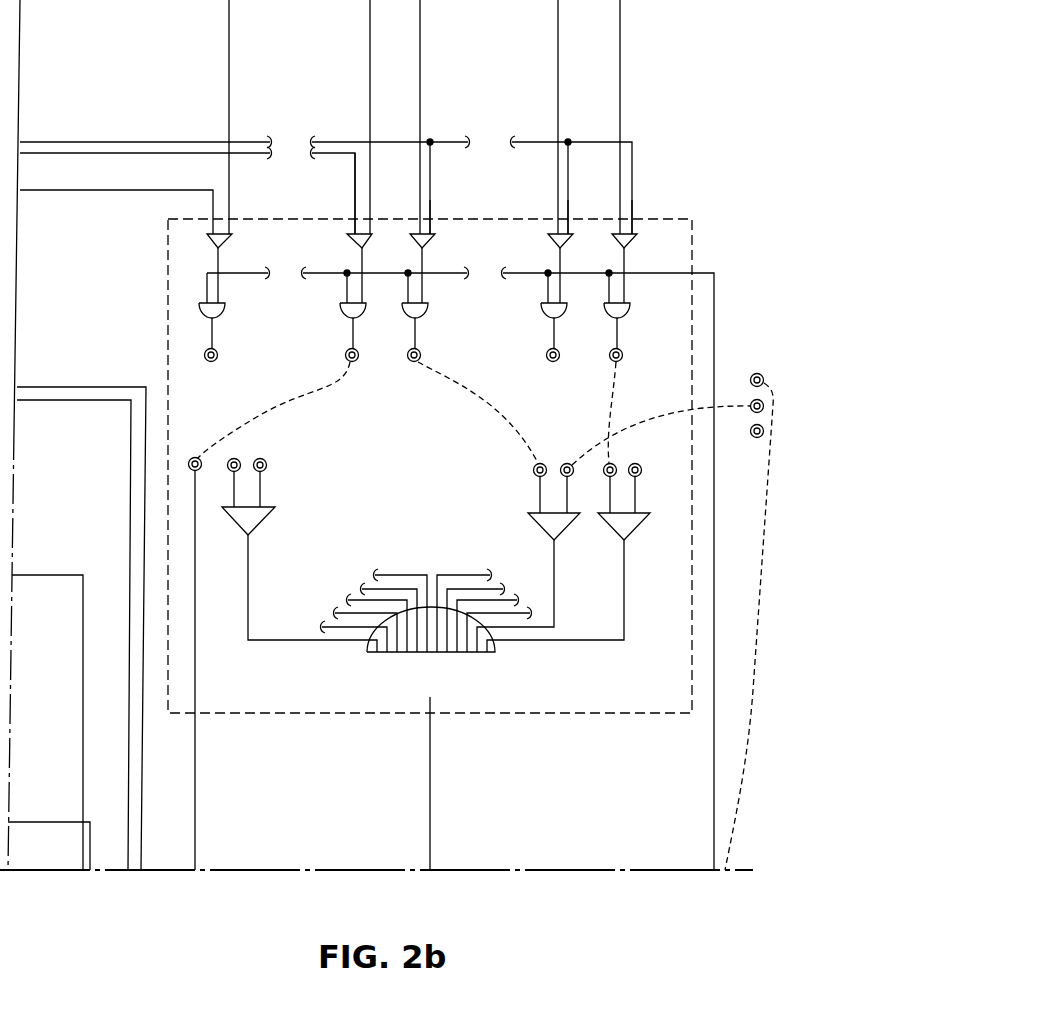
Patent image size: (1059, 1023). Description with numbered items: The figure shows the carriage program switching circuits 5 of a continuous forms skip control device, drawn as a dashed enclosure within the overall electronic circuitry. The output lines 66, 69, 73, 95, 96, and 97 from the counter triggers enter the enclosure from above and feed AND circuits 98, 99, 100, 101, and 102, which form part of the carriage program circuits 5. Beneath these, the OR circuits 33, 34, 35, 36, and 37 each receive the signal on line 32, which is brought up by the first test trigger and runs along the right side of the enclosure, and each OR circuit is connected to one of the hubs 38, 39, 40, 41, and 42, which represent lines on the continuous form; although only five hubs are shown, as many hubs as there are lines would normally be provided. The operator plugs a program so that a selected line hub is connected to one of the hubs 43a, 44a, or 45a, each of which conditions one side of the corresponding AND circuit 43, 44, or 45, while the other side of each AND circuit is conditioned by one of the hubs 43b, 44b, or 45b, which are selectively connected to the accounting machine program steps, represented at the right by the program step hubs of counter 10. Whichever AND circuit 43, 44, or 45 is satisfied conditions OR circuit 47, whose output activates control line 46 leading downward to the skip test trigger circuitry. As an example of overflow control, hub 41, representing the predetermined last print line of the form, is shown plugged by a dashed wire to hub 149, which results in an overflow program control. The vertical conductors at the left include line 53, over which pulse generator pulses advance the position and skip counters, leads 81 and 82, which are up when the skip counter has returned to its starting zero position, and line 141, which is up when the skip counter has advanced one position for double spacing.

The carriage program switching circuits 5 is at (265, 217).
The counter 10 is at (758, 595).
The line 32 is at (714, 740).
The OR circuit 33 is at (626, 310).
The OR circuit 34 is at (545, 311).
The OR circuit 35 is at (424, 310).
The OR circuit 36 is at (362, 310).
The OR circuit 37 is at (222, 310).
The hub 38 is at (610, 357).
The hub 39 is at (547, 357).
The hub 40 is at (408, 357).
The hub 41 is at (346, 357).
The hub 42 is at (217, 357).
The AND circuit 43 is at (630, 528).
The hub 43a is at (613, 463).
The hub 43b is at (642, 470).
The AND circuit 44 is at (560, 528).
The hub 44a is at (526, 482).
The hub 44b is at (564, 476).
The AND circuit 45 is at (262, 514).
The hub 45a is at (229, 461).
The hub 45b is at (262, 459).
The control line 46 is at (428, 745).
The OR circuit 47 is at (483, 670).
The line 53 is at (84, 790).
The output line 66 is at (370, 51).
The output line 69 is at (229, 54).
The output line 73 is at (420, 209).
The lead 81 is at (140, 735).
The lead 82 is at (62, 821).
The output line 95 is at (558, 57).
The output line 96 is at (358, 207).
The output line 97 is at (213, 198).
The AND circuit 98 is at (633, 240).
The AND circuit 99 is at (569, 240).
The AND circuit 100 is at (431, 240).
The AND circuit 101 is at (369, 240).
The AND circuit 102 is at (228, 240).
The line 141 is at (130, 683).
The hub 149 is at (189, 460).